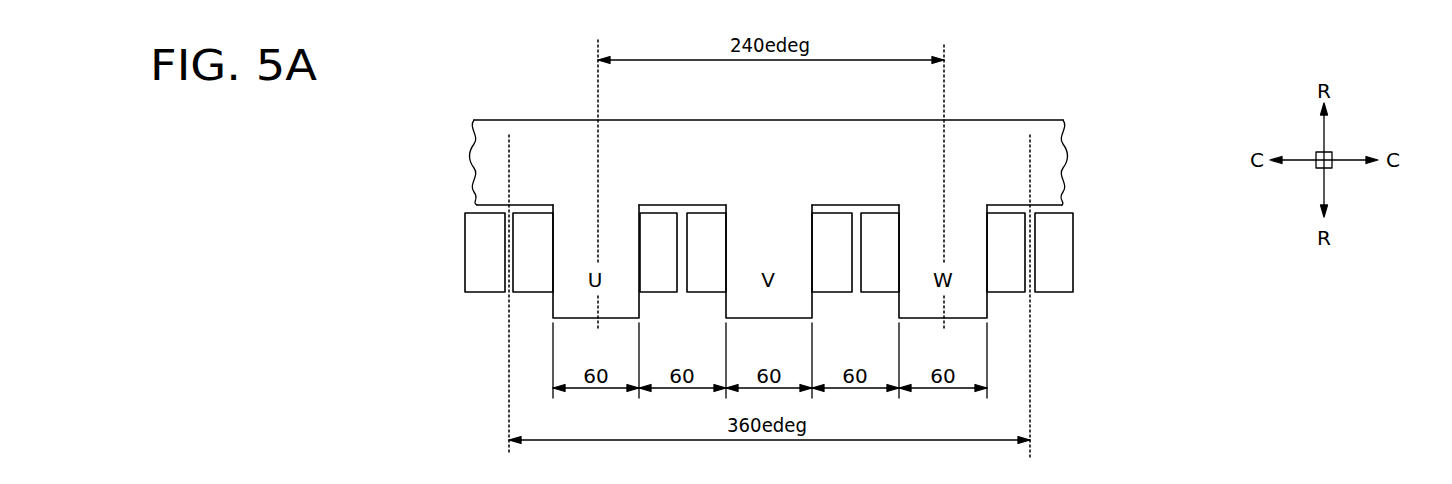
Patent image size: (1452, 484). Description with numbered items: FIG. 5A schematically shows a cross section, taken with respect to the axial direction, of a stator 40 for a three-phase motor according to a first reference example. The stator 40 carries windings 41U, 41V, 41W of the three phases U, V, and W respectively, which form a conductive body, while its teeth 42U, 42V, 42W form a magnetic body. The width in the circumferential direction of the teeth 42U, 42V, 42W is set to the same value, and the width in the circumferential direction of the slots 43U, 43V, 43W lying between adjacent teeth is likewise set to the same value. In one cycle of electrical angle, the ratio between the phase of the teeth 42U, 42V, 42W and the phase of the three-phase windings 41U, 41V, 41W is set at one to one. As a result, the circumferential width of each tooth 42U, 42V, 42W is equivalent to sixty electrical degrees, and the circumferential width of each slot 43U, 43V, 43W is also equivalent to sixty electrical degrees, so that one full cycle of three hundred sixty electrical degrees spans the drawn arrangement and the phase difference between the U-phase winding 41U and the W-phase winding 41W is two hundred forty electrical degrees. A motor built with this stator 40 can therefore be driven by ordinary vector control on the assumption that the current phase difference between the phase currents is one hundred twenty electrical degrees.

The stator 40 is at (1046, 109).
The U-phase winding 41U is at (542, 224).
The V-phase winding 41V is at (713, 224).
The W-phase winding 41W is at (885, 224).
The U-phase tooth 42U is at (576, 310).
The V-phase tooth 42V is at (747, 312).
The W-phase tooth 42W is at (963, 318).
The U-phase slot 43U is at (683, 198).
The V-phase slot 43V is at (857, 198).
The W-phase slot 43W is at (511, 198).